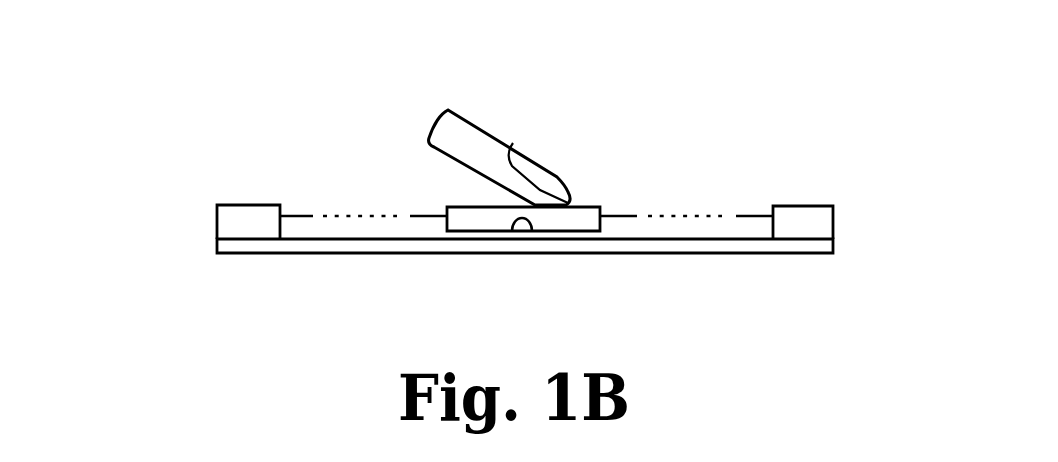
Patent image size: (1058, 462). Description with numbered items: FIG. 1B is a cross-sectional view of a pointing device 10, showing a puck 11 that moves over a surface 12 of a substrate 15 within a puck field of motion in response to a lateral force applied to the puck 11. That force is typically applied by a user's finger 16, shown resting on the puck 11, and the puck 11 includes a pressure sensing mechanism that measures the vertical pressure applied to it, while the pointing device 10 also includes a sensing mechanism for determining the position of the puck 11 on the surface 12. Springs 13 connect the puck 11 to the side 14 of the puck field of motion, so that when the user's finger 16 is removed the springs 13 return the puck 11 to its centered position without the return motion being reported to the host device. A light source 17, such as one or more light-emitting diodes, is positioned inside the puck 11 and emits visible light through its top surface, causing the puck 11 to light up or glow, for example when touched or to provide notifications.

The pointing device 10 is at (176, 153).
The puck 11 is at (450, 206).
The surface 12 is at (368, 238).
The springs 13 is at (615, 216).
The side 14 is at (813, 209).
The substrate 15 is at (545, 253).
The user's finger 16 is at (485, 133).
The light source 17 is at (506, 223).